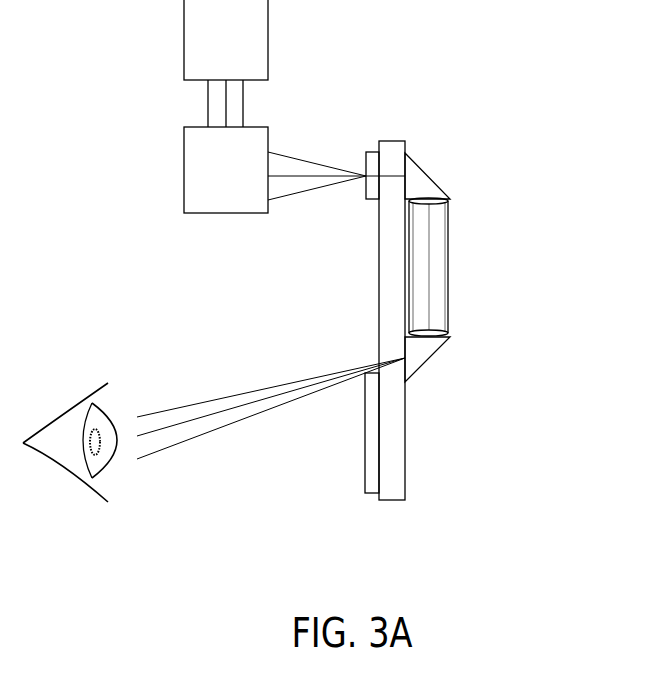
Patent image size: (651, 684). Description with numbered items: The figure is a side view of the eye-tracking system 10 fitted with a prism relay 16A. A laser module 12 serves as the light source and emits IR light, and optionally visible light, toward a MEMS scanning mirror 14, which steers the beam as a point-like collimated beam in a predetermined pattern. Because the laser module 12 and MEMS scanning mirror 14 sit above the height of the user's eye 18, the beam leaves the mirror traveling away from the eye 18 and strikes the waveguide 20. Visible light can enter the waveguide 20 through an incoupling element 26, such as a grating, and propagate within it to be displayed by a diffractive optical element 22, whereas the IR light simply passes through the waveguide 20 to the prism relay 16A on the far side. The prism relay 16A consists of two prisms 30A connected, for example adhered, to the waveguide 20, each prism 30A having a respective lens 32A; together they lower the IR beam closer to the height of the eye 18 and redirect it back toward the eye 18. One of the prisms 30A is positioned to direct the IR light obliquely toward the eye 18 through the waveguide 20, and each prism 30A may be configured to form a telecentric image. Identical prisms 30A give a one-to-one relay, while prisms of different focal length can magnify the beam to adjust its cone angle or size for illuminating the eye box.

The eye-tracking system 10 is at (108, 208).
The laser module 12 is at (237, 60).
The MEMS scanning mirror 14 is at (215, 195).
The prism relay 16A is at (522, 173).
The eye 18 is at (63, 467).
The waveguide 20 is at (393, 138).
The diffractive optical element 22 is at (372, 497).
The incoupling element 26 is at (370, 150).
The prism 30A is at (428, 170).
The lens 32A is at (449, 202).